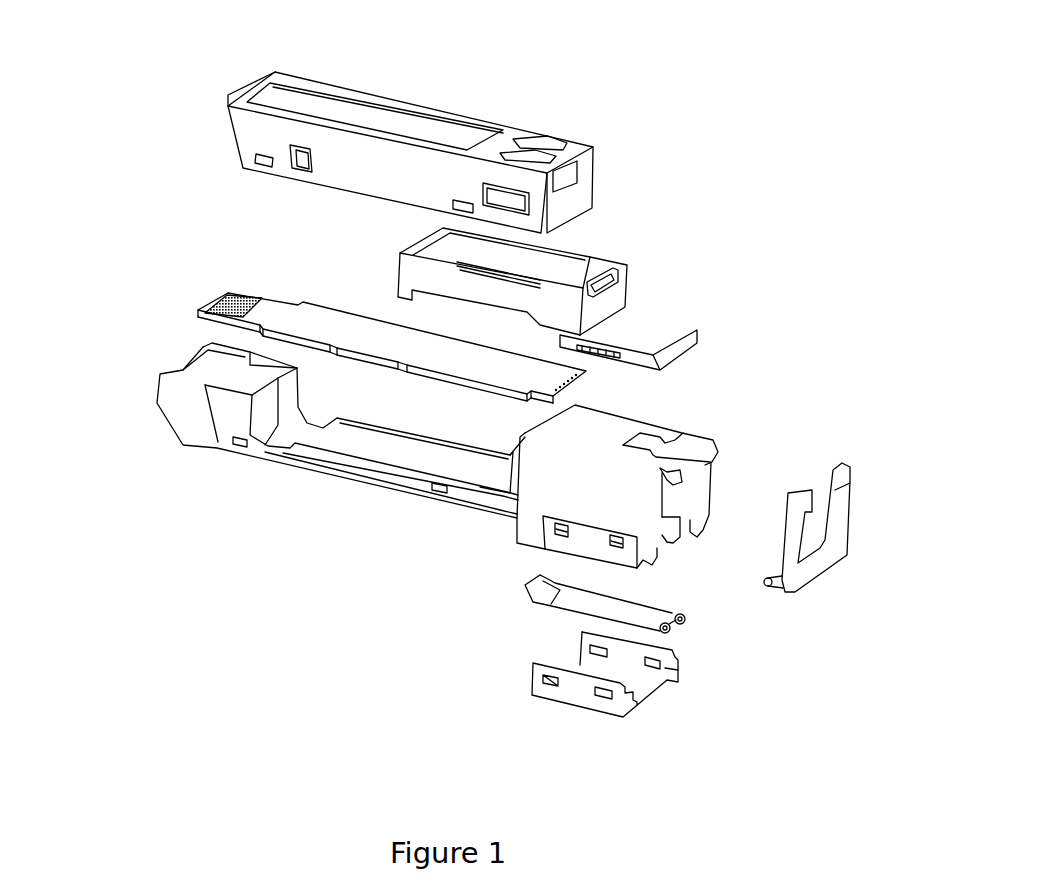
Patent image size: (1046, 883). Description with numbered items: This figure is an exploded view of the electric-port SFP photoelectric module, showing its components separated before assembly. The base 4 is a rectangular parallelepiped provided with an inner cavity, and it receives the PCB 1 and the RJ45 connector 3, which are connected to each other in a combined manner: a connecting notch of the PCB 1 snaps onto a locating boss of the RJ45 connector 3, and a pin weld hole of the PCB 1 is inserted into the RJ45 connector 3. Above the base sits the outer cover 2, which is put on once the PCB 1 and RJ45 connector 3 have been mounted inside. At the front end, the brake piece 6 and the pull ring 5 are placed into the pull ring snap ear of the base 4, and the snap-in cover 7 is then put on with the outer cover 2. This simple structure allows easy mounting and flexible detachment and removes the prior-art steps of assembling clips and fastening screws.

The PCB 1 is at (198, 272).
The outer cover 2 is at (308, 74).
The RJ45 connector 3 is at (612, 236).
The base 4 is at (708, 395).
The pull ring 5 is at (864, 450).
The brake piece 6 is at (718, 618).
The snap-in cover 7 is at (707, 676).